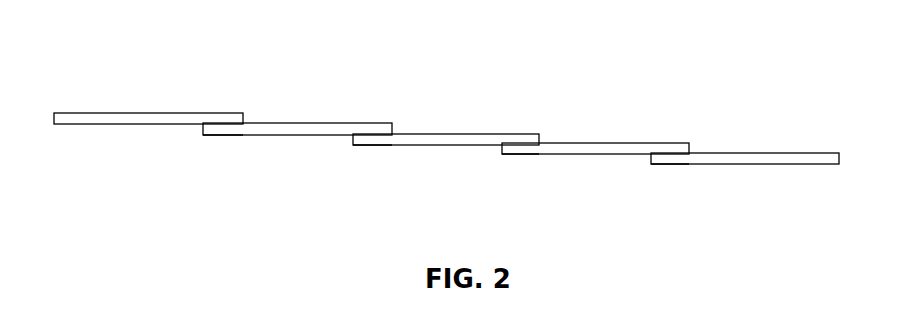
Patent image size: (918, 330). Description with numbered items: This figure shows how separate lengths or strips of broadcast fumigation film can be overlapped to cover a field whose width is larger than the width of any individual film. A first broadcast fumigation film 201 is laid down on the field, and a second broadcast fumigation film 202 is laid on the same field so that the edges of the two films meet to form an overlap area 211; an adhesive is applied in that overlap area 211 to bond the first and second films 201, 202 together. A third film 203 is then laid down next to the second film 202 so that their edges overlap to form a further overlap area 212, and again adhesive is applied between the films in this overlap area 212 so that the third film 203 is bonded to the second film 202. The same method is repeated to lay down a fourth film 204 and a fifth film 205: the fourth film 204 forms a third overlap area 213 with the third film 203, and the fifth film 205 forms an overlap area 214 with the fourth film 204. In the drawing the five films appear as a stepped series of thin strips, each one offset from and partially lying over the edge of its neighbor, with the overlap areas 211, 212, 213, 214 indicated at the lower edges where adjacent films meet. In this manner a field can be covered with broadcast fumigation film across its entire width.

The first broadcast fumigation film 201 is at (729, 153).
The second broadcast fumigation film 202 is at (590, 143).
The third film 203 is at (448, 134).
The fourth film 204 is at (292, 123).
The fifth film 205 is at (127, 113).
The overlap area 211 is at (667, 165).
The overlap area 212 is at (520, 155).
The third overlap area 213 is at (372, 146).
The overlap area 214 is at (222, 136).